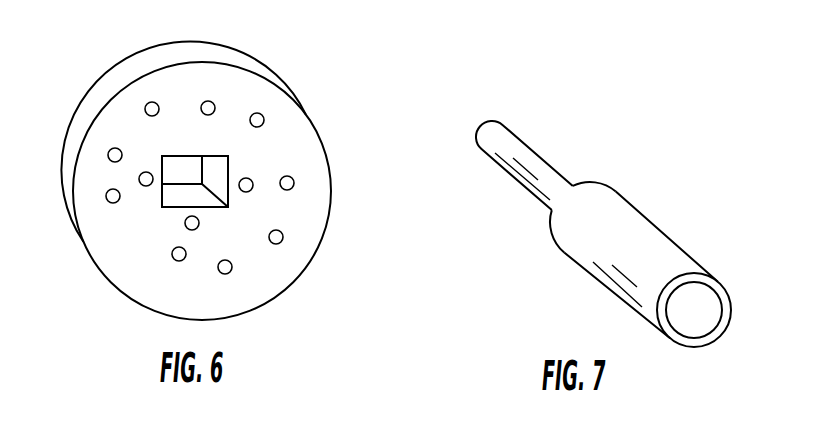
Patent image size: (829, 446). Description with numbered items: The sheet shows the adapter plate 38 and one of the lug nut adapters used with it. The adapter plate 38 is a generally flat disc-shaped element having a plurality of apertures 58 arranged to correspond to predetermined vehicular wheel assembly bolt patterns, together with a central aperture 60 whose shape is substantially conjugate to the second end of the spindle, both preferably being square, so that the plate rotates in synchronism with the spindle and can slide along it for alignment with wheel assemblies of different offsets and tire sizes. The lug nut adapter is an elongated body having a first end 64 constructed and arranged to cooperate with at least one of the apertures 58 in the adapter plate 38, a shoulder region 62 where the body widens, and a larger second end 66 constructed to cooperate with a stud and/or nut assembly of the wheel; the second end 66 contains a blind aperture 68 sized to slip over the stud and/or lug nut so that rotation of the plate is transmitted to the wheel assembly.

In FIG. 6, the adapter plate 38 is at (128, 75).
In FIG. 6, the apertures 58 is at (260, 113).
In FIG. 6, the central aperture 60 is at (228, 207).
In FIG. 7, the shoulder / collar 62 is at (607, 182).
In FIG. 7, the first end 64 is at (525, 150).
In FIG. 7, the second end 66 is at (658, 243).
In FIG. 7, the blind aperture 68 is at (712, 380).